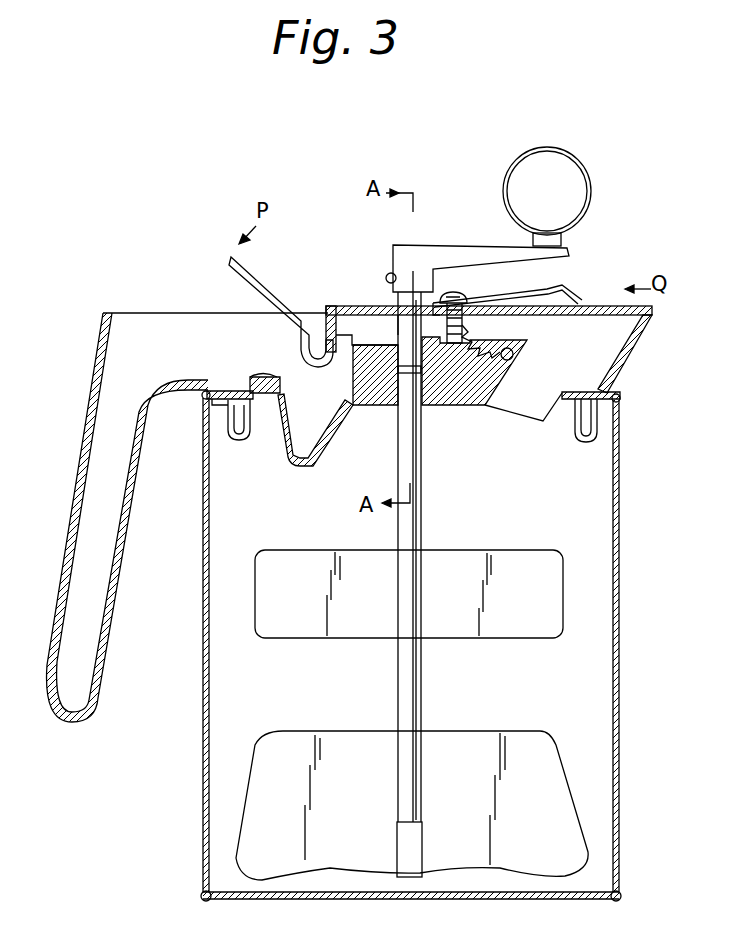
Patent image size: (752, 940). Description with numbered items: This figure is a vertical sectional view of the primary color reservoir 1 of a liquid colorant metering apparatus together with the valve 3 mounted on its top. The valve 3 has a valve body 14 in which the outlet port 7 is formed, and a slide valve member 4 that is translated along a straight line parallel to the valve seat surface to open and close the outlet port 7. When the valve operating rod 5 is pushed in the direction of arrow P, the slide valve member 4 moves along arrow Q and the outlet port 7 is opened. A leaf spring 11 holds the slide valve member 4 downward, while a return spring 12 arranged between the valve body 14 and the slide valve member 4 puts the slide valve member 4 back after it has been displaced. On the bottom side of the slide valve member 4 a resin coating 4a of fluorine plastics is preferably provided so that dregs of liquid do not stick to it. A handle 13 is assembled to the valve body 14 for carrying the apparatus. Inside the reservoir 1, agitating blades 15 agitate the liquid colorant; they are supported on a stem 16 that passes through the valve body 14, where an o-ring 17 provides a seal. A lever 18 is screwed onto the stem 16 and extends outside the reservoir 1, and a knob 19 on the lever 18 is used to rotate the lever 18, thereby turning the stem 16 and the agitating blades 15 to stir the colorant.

The primary color reservoir 1 is at (621, 561).
The valve 3 is at (603, 302).
The slide valve member 4 is at (643, 308).
The resin coating 4a is at (628, 322).
The valve operating rod 5 is at (262, 280).
The outlet port 7 is at (607, 352).
The leaf spring 11 is at (553, 292).
The return spring 12 is at (472, 333).
The handle 13 is at (82, 373).
The valve body 14 is at (378, 405).
The agitating blades 15 is at (545, 549).
The stem 16 is at (425, 523).
The o-ring 17 is at (414, 374).
The lever 18 is at (452, 246).
The knob 19 is at (591, 180).